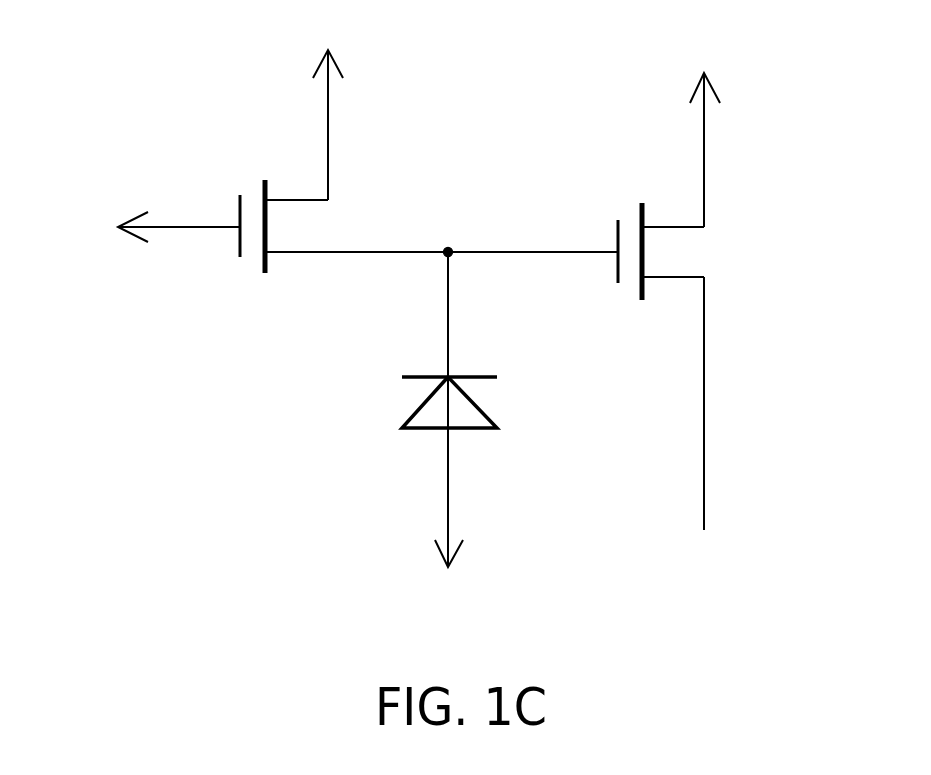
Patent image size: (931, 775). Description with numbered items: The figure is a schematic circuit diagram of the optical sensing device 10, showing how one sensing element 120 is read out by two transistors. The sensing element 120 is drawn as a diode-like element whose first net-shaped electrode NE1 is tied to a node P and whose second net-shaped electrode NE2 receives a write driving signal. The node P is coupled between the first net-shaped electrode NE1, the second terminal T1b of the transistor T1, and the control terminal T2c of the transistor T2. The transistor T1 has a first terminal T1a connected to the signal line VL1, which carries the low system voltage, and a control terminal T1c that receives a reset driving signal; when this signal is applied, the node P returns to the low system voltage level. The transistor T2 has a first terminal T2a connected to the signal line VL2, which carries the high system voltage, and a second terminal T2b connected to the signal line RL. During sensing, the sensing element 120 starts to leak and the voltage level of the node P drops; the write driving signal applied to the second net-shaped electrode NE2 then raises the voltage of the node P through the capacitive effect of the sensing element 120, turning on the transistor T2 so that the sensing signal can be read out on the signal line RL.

The optical sensing device 10 is at (826, 652).
The transistor T1 is at (223, 217).
The first terminal of the transistor T1 T1a is at (297, 199).
The second terminal of the transistor T1 T1b is at (292, 254).
The control terminal of the transistor T1 T1c is at (215, 229).
The transistor T2 is at (669, 252).
The first terminal of the transistor T2 T2a is at (673, 227).
The second terminal of the transistor T2 T2b is at (673, 279).
The control terminal of the transistor T2 T2c is at (580, 250).
The signal line VL1 is at (328, 125).
The signal line VL2 is at (704, 148).
The signal line RL is at (704, 402).
The sensing element 120 is at (392, 400).
The first net-shaped electrode NE1 is at (425, 375).
The second net-shaped electrode NE2 is at (425, 430).
The node P is at (441, 389).